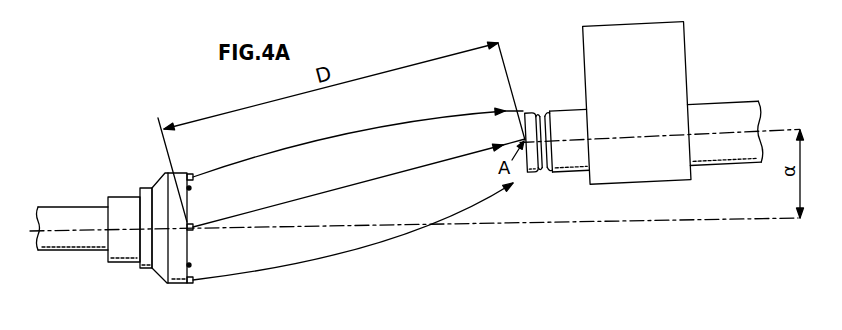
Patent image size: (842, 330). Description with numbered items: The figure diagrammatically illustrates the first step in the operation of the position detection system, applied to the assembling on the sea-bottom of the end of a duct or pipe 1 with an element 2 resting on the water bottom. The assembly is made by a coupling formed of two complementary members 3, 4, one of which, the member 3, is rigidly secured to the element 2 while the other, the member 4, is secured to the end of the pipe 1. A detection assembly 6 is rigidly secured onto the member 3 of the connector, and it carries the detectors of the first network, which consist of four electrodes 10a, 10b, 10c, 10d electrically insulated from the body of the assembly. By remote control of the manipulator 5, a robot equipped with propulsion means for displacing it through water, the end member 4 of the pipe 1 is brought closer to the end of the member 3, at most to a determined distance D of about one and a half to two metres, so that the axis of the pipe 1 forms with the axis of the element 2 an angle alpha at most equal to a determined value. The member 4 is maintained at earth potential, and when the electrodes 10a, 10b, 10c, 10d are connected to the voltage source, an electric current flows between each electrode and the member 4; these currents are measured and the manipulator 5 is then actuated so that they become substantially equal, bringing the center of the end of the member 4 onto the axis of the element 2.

The pipe 1 is at (732, 172).
The element 2 is at (55, 252).
The member 3 is at (113, 262).
The member 4 is at (566, 173).
The manipulator 5 is at (634, 186).
The detection assembly 6 is at (130, 151).
The electrode 10a is at (193, 175).
The electrode 10b is at (193, 226).
The electrode 10c is at (194, 281).
The electrode 10d is at (193, 226).